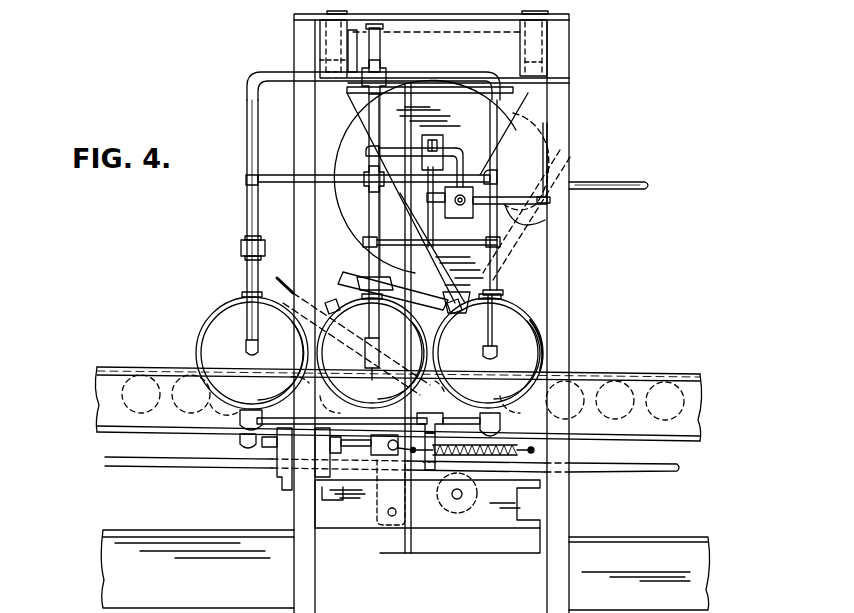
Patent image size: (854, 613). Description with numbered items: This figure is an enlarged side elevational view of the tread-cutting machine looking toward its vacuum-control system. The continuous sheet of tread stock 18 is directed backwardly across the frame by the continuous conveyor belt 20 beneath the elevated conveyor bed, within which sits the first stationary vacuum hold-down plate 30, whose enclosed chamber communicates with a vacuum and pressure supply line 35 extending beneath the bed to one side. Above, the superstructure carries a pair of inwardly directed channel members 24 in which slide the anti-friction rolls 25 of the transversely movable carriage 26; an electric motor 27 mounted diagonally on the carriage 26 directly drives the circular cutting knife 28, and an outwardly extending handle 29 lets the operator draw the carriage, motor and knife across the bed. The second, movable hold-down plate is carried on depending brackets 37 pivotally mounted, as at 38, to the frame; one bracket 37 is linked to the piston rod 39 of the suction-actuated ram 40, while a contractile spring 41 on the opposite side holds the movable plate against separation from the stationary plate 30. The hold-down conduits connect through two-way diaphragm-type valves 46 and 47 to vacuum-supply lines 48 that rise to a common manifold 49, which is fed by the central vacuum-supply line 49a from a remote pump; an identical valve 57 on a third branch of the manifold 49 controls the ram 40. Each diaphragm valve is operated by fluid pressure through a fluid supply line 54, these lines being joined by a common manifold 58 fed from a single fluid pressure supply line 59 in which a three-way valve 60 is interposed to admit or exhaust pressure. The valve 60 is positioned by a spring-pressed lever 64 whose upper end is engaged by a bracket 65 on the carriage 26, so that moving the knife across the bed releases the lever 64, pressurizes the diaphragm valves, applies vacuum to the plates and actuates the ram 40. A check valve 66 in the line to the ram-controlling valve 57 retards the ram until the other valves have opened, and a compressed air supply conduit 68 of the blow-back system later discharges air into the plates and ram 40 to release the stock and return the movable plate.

The tread stock 18 is at (132, 368).
The continuous conveyor belt 20 is at (191, 468).
The channel members 24 is at (543, 50).
The anti-friction rolls 25 is at (320, 47).
The motor bracket or carriage 26 is at (517, 115).
The electric motor 27 is at (362, 165).
The circular cutting knife 28 is at (277, 278).
The handle 29 is at (616, 182).
The first stationary vacuum hold-down plate 30 is at (488, 353).
The vacuum and pressure supply line 35 is at (452, 413).
The supporting and depending brackets 37 is at (385, 474).
The pivotal mounting 38 is at (390, 518).
The piston rod 39 is at (353, 452).
The suction-actuated ram 40 is at (283, 448).
The contractile spring 41 is at (490, 457).
The two-way diaphragm-type valve 46 is at (527, 315).
The two-way diaphragm-type valve 47 is at (372, 353).
The vacuum-supply lines 48 is at (443, 131).
The common manifold 49 is at (437, 72).
The central vacuum-supply line 49a is at (382, 32).
The fluid supply line 54 is at (228, 307).
The valve 57 is at (252, 353).
The common manifold 58 is at (287, 183).
The fluid pressure supply line 59 is at (569, 227).
The three-way valve 60 is at (453, 218).
The lever 64 is at (428, 212).
The bracket 65 is at (443, 132).
The check valve 66 is at (241, 248).
The compressed air supply conduit 68 is at (424, 473).